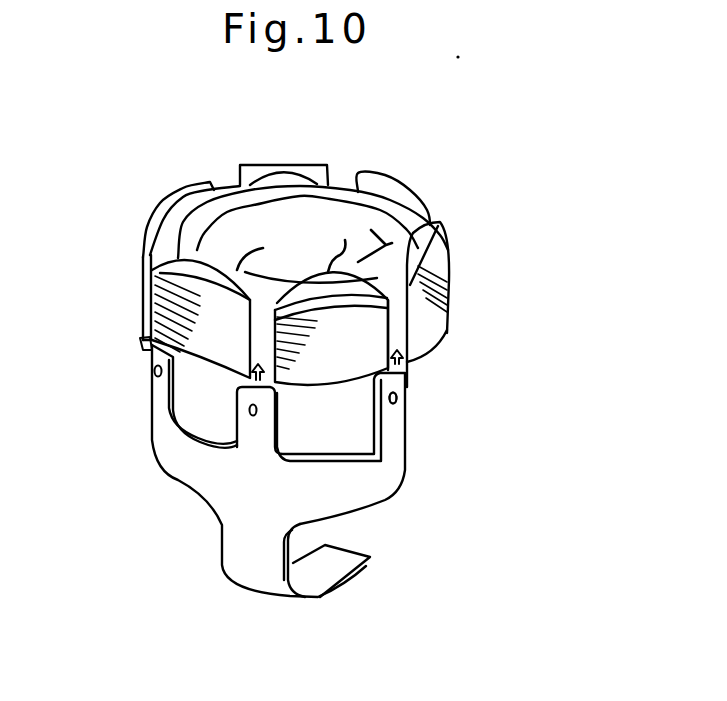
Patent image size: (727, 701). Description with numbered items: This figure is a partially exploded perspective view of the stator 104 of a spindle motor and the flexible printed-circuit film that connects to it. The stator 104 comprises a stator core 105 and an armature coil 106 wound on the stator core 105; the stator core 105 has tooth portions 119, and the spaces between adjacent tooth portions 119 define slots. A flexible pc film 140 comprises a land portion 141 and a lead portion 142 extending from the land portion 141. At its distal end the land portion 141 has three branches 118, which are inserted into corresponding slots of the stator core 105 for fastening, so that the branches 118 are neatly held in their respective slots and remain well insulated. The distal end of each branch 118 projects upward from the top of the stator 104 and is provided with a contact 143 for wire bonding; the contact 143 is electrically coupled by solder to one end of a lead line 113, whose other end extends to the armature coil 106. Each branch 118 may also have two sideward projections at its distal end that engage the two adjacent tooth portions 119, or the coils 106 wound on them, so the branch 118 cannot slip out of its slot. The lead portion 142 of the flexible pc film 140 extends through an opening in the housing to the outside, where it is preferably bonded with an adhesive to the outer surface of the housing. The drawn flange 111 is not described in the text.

The stator 104 is at (401, 178).
The stator core 105 is at (455, 284).
The armature coil 106 is at (195, 268).
The side flange 111 is at (157, 368).
The lead line 113 is at (255, 247).
The branch 118 is at (146, 348).
The tooth portion 119 is at (200, 288).
The flexible pc film 140 is at (196, 535).
The land portion 141 is at (425, 476).
The lead portion 142 is at (333, 567).
The contact 143 is at (252, 413).